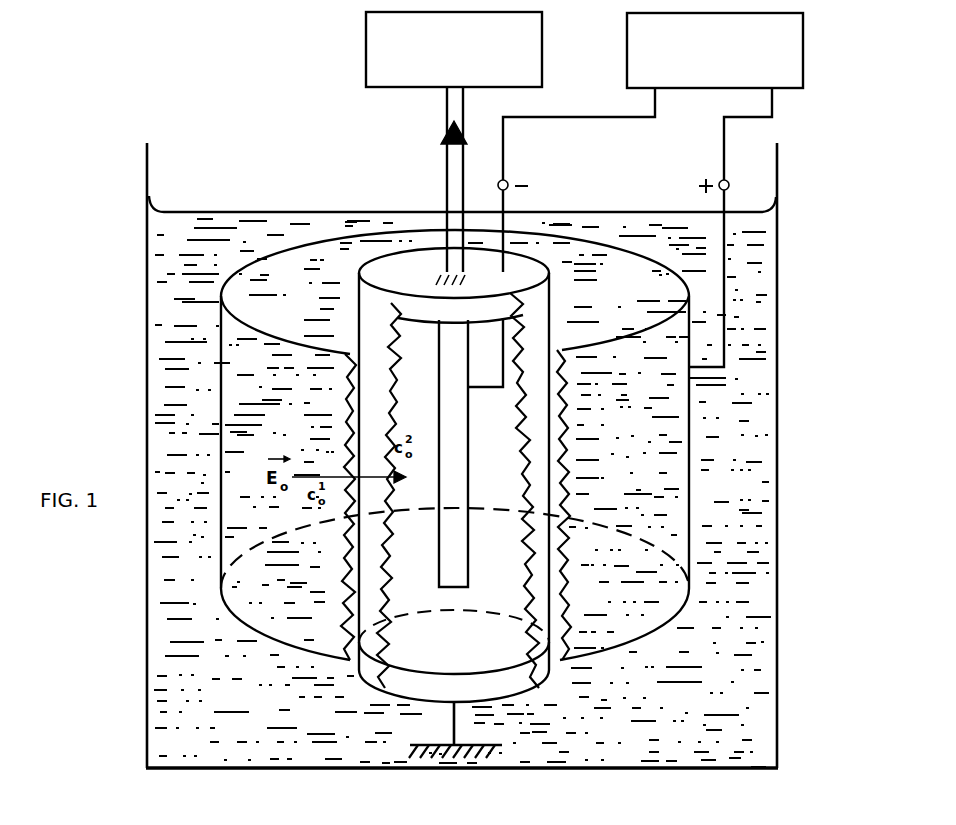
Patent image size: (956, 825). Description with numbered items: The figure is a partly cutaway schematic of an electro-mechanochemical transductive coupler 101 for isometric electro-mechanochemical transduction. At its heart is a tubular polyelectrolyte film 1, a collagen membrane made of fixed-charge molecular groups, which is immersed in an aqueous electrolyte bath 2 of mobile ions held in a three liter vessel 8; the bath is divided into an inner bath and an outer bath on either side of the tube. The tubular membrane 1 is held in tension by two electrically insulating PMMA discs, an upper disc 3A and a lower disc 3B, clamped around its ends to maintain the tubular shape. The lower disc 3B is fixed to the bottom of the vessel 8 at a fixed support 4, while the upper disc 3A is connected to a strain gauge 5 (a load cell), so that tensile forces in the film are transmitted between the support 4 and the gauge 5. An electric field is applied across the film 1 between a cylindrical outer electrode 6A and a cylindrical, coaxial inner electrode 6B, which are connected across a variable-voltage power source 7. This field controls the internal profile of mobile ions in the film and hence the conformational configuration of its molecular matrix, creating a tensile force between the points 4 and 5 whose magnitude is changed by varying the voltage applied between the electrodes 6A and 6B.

The tubular polyelectrolyte film 1 is at (553, 622).
The aqueous electrolyte bath 2 is at (188, 230).
The upper electrically insulating disc 3A is at (533, 297).
The lower electrically insulating disc 3B is at (512, 687).
The fixed support 4 is at (505, 747).
The strain gauge 5 is at (543, 67).
The cylindrical outer electrode 6A is at (691, 516).
The cylindrical coaxial inner electrode 6B is at (470, 477).
The variable-voltage power source 7 is at (803, 62).
The vessel 8 is at (147, 683).
The electro-mechanochemical transductive coupler 101 is at (797, 252).